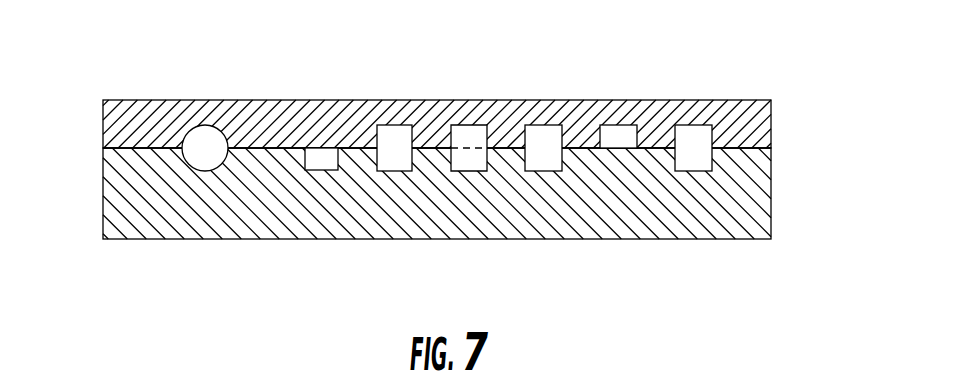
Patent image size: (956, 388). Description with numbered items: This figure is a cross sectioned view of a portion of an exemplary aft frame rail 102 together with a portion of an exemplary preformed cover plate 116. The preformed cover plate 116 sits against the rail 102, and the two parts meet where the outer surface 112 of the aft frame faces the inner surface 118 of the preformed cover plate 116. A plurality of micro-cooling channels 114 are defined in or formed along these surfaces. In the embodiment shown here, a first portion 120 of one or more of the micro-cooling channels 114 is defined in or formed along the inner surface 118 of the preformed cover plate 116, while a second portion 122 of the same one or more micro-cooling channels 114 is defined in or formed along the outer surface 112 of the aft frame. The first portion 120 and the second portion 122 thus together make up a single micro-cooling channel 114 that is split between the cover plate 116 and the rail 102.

The rail 102 is at (662, 218).
The outer surface 112 is at (120, 147).
The micro-cooling channels 114 is at (397, 160).
The preformed cover plate 116 is at (633, 127).
The inner surface of the preformed cover plate 118 is at (147, 150).
The first portion 120 is at (463, 128).
The second portion 122 is at (465, 162).